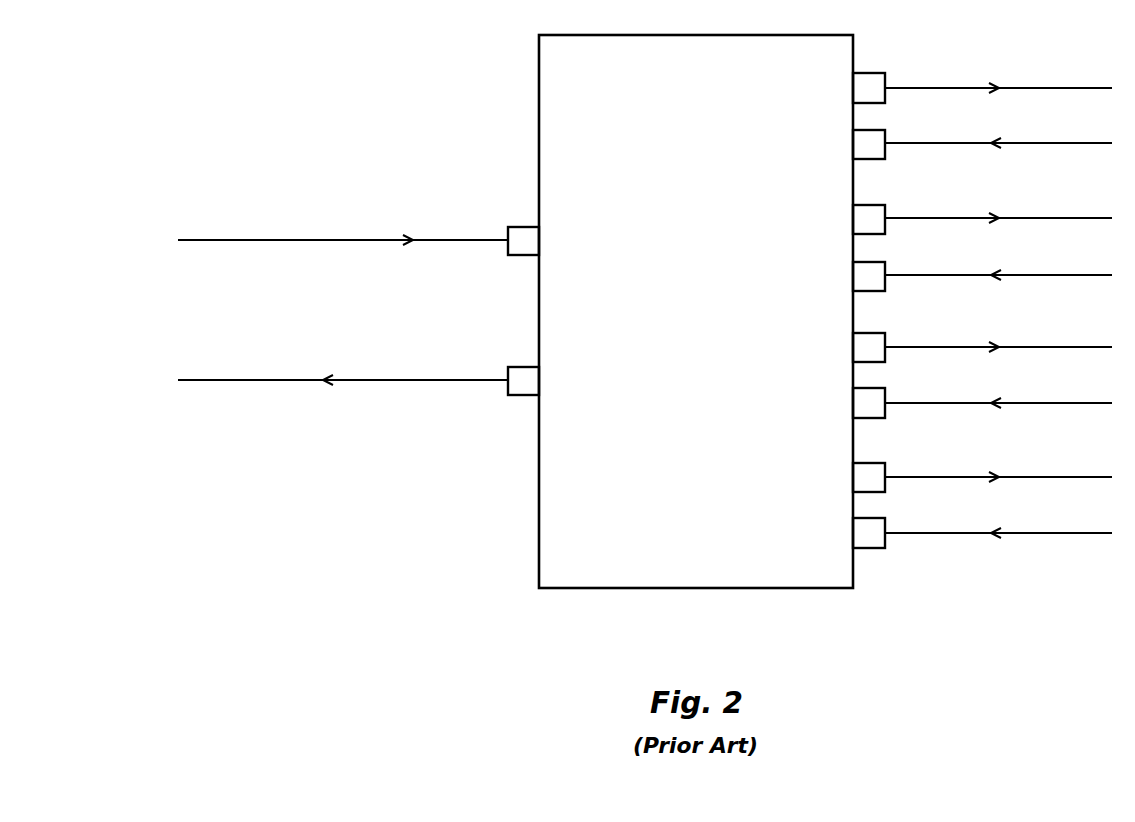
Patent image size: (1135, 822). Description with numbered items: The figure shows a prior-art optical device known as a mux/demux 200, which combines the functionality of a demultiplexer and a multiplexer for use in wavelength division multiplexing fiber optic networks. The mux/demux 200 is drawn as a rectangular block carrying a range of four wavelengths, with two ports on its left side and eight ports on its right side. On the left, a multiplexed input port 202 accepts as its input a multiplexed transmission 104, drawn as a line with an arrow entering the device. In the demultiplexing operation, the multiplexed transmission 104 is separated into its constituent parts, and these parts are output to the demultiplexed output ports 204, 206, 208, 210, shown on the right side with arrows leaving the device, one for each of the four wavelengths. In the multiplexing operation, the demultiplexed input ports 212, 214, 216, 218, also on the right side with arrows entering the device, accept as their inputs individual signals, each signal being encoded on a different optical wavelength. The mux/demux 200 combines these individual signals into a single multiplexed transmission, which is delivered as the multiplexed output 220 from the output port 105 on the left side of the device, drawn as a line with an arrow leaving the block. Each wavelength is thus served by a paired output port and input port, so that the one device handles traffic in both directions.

The mux/demux 200 is at (535, 603).
The multiplexed input port 202 is at (524, 227).
The output port 105 is at (524, 367).
The multiplexed transmission 104 is at (298, 239).
The multiplexed output 220 is at (298, 379).
The demultiplexed output port 204 is at (885, 73).
The demultiplexed input port 212 is at (885, 130).
The demultiplexed output port 206 is at (885, 205).
The demultiplexed input port 214 is at (885, 262).
The demultiplexed output port 208 is at (885, 333).
The demultiplexed input port 216 is at (885, 388).
The demultiplexed output port 210 is at (885, 463).
The demultiplexed input port 218 is at (885, 518).